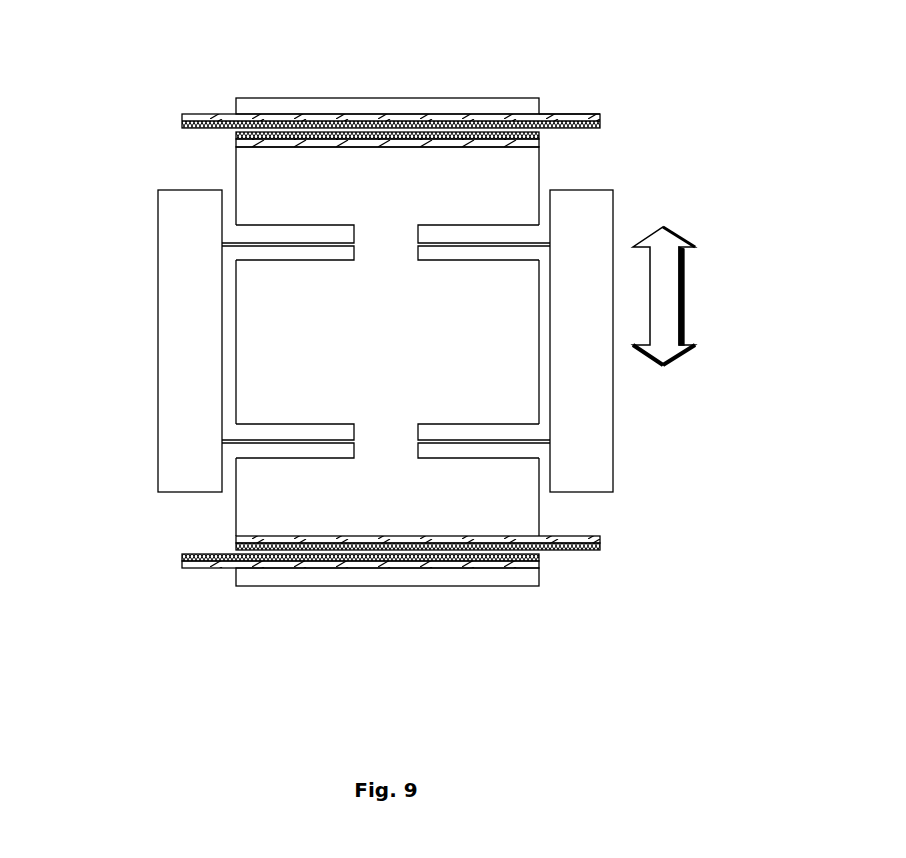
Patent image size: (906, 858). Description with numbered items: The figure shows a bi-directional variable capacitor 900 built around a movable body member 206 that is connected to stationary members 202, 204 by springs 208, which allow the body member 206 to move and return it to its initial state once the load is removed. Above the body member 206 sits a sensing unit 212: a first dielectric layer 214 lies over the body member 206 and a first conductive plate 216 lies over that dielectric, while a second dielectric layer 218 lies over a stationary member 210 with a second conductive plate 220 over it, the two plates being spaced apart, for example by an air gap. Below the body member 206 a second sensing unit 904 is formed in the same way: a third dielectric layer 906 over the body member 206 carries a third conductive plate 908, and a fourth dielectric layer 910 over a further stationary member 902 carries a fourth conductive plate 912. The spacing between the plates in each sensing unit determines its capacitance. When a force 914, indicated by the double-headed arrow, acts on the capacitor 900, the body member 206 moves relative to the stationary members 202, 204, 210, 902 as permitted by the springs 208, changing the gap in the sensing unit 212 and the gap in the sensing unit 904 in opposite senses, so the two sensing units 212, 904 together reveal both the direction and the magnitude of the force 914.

The bi-directional variable capacitor 900 is at (140, 30).
The stationary member 202 is at (197, 477).
The stationary member 204 is at (562, 197).
The body member 206 is at (262, 185).
The springs 208 is at (518, 243).
The stationary member 210 is at (428, 99).
The sensing unit 212 is at (360, 80).
The first dielectric layer 214 is at (513, 142).
The first conductive plate 216 is at (285, 137).
The second dielectric layer 218 is at (546, 112).
The second conductive plate 220 is at (600, 118).
The stationary member 902 is at (492, 577).
The second sensing unit 904 is at (389, 610).
The third dielectric layer 906 is at (515, 542).
The third conductive plate 908 is at (297, 546).
The fourth dielectric layer 910 is at (202, 562).
The fourth conductive plate 912 is at (293, 567).
The force 914 is at (660, 317).